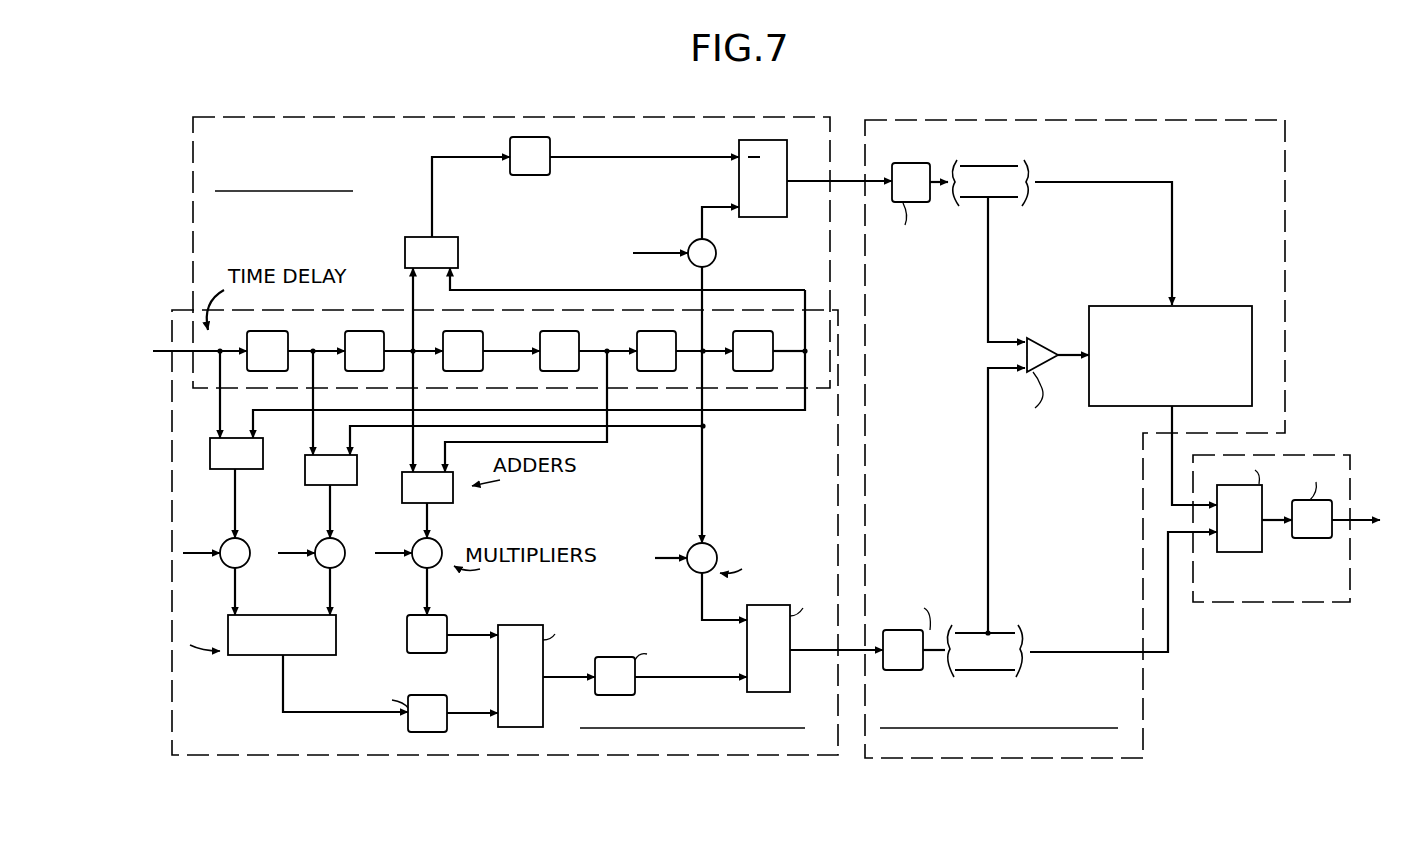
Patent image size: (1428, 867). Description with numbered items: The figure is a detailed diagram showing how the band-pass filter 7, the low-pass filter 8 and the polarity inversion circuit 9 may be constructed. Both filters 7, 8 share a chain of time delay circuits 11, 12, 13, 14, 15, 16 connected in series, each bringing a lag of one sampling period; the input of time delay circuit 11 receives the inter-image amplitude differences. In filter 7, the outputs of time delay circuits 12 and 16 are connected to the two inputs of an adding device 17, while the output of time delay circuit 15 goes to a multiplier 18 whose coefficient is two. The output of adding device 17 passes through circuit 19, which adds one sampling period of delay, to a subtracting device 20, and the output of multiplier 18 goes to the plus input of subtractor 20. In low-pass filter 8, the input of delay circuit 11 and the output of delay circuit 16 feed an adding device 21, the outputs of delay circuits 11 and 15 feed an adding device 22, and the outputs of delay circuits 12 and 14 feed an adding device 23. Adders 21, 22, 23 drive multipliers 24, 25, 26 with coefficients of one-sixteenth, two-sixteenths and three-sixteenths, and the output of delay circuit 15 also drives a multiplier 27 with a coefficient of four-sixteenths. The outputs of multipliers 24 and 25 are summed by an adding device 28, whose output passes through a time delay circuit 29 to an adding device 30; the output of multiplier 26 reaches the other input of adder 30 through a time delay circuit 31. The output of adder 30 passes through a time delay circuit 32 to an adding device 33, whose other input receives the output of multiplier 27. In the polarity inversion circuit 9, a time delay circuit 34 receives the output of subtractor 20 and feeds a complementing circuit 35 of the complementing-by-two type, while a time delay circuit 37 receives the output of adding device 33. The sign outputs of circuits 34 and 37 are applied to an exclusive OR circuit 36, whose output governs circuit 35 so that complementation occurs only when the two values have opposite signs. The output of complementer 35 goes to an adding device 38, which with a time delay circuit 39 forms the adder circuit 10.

The filter 7 is at (564, 119).
The low-pass filter 8 is at (654, 757).
The polarity inversion circuit 9 is at (1014, 119).
The adder circuit 10 is at (1268, 605).
The time delay circuit 11 is at (246, 332).
The time delay circuit 12 is at (344, 332).
The time delay circuit 13 is at (444, 332).
The time delay circuit 14 is at (540, 332).
The time delay circuit 15 is at (637, 332).
The time delay circuit 16 is at (734, 332).
The adding device 17 is at (458, 248).
The multiplier 18 is at (719, 251).
The time delay circuit 19 is at (530, 176).
The subtracting device 20 is at (739, 177).
The adding device 21 is at (218, 469).
The adding device 22 is at (305, 485).
The adding device 23 is at (402, 503).
The multiplier 24 is at (224, 566).
The multiplier 25 is at (316, 567).
The multiplier 26 is at (416, 567).
The multiplier 27 is at (688, 573).
The adding device 28 is at (258, 656).
The time delay circuit 29 is at (412, 695).
The adding device 30 is at (513, 625).
The time delay circuit 31 is at (407, 636).
The time delay circuit 32 is at (609, 657).
The adding device 33 is at (762, 610).
The time delay circuit 34 is at (903, 162).
The complementing circuit 35 is at (1226, 306).
The exclusive OR circuit 36 is at (1038, 347).
The time delay circuit 37 is at (898, 630).
The adding device 38 is at (1244, 552).
The time delay circuit 39 is at (1318, 550).